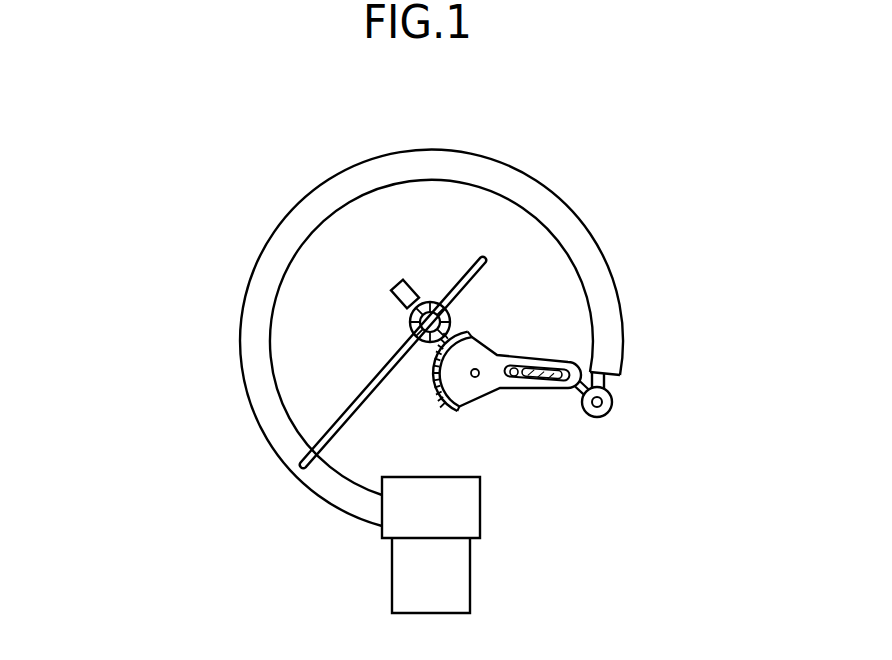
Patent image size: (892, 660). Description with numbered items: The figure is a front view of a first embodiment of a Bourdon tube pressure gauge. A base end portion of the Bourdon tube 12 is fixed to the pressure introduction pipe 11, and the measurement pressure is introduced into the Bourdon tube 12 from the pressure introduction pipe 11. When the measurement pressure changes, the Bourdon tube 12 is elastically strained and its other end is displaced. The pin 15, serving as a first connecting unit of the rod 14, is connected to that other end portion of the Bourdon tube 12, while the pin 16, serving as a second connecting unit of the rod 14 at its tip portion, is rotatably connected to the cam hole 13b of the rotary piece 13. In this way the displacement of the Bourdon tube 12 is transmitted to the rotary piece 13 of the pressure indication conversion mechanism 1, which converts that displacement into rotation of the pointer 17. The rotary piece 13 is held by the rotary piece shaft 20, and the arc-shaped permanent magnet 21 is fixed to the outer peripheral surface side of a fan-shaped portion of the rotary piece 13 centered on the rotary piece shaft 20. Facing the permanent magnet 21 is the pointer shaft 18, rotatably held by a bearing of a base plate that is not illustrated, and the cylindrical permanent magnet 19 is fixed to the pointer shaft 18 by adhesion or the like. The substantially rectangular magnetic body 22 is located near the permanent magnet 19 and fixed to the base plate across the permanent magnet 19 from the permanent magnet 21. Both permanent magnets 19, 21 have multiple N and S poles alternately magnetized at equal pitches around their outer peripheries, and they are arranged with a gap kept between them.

The pressure indication conversion mechanism 1 is at (520, 335).
The pressure introduction pipe 11 is at (425, 592).
The Bourdon tube 12 is at (598, 267).
The rotary piece 13 is at (490, 395).
The cam hole 13b is at (587, 368).
The rod 14 is at (580, 408).
The pin 15 is at (612, 414).
The pin 16 is at (530, 397).
The pointer 17 is at (327, 430).
The pointer shaft 18 is at (410, 317).
The cylindrical permanent magnet 19 is at (413, 328).
The rotary piece shaft 20 is at (480, 366).
The arc-shaped permanent magnet 21 is at (458, 415).
The magnetic body 22 is at (391, 292).